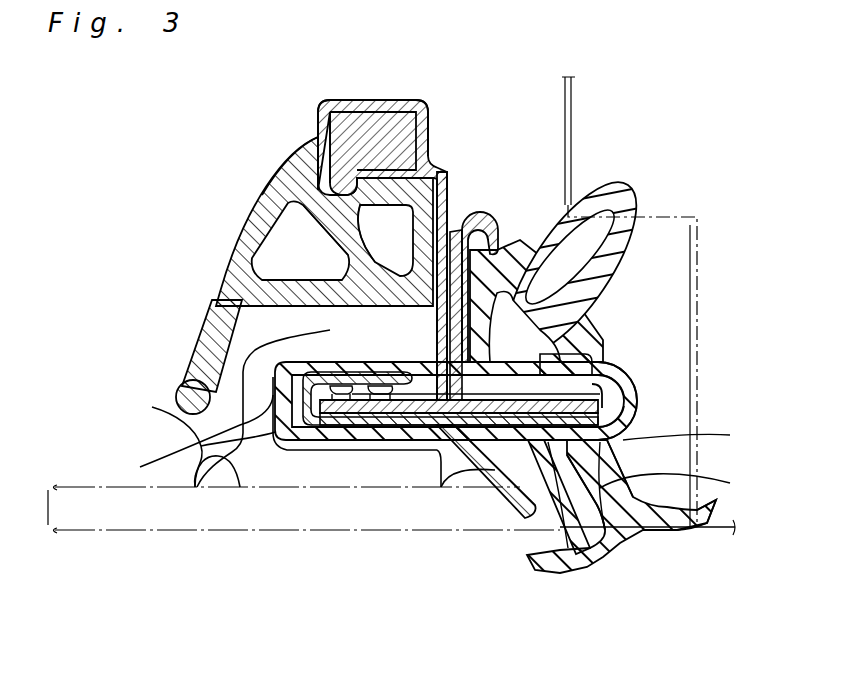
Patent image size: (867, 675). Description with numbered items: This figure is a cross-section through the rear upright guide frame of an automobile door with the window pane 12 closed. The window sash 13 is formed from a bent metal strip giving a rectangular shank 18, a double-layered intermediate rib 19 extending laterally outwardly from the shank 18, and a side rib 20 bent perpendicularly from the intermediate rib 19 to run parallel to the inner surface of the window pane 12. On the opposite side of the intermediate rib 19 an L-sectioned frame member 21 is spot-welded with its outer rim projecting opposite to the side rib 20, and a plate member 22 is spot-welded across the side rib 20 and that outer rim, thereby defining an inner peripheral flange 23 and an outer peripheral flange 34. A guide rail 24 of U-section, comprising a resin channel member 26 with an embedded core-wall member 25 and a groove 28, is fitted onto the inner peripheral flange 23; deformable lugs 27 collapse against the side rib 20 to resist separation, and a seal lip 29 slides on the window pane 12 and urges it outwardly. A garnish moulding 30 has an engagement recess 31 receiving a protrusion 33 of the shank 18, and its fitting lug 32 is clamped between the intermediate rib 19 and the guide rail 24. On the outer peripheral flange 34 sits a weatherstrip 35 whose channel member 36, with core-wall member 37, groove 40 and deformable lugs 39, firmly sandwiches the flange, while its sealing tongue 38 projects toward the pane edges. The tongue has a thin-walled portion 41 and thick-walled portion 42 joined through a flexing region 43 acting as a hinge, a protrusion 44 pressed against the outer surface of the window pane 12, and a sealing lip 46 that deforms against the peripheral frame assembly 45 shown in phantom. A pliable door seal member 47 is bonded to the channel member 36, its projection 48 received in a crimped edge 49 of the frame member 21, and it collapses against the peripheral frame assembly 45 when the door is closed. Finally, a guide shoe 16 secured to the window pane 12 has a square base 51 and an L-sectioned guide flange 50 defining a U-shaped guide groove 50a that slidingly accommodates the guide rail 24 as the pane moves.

The window pane 12 is at (100, 525).
The window sash 13 is at (407, 100).
The guide shoe 16 is at (220, 473).
The shank 18 is at (373, 100).
The intermediate rib 19 is at (452, 200).
The side rib 20 is at (392, 396).
The L-sectioned frame member 21 is at (583, 240).
The plate member 22 is at (430, 414).
The inner peripheral flange 23 is at (340, 426).
The guide rail 24 is at (327, 440).
The core-wall member 25 is at (297, 378).
The channel member 26 is at (216, 418).
The deformable lugs 27 is at (362, 392).
The groove 28 is at (213, 303).
The seal lip 29 is at (490, 485).
The garnish moulding 30 is at (262, 212).
The engagement recess 31 is at (306, 183).
The fitting lug 32 is at (312, 268).
The protrusion 33 is at (340, 170).
The outer peripheral flange 34 is at (612, 398).
The weatherstrip 35 is at (703, 530).
The channel member 36 is at (636, 350).
The core-wall member 37 is at (616, 430).
The sealing tongue 38 is at (600, 563).
The deformable lugs 39 is at (585, 365).
The groove 40 is at (622, 380).
The thin-walled portion 41 is at (578, 520).
The thick-walled portion 42 is at (630, 480).
The flexing region 43 is at (620, 550).
The protrusion 44 is at (545, 558).
The peripheral frame assembly 45 is at (574, 96).
The sealing lip 46 is at (680, 530).
The door seal member 47 is at (652, 188).
The projection 48 is at (536, 301).
The crimped edge 49 is at (473, 225).
The guide flange 50 is at (285, 447).
The guide groove 50a is at (253, 445).
The base 51 is at (307, 425).